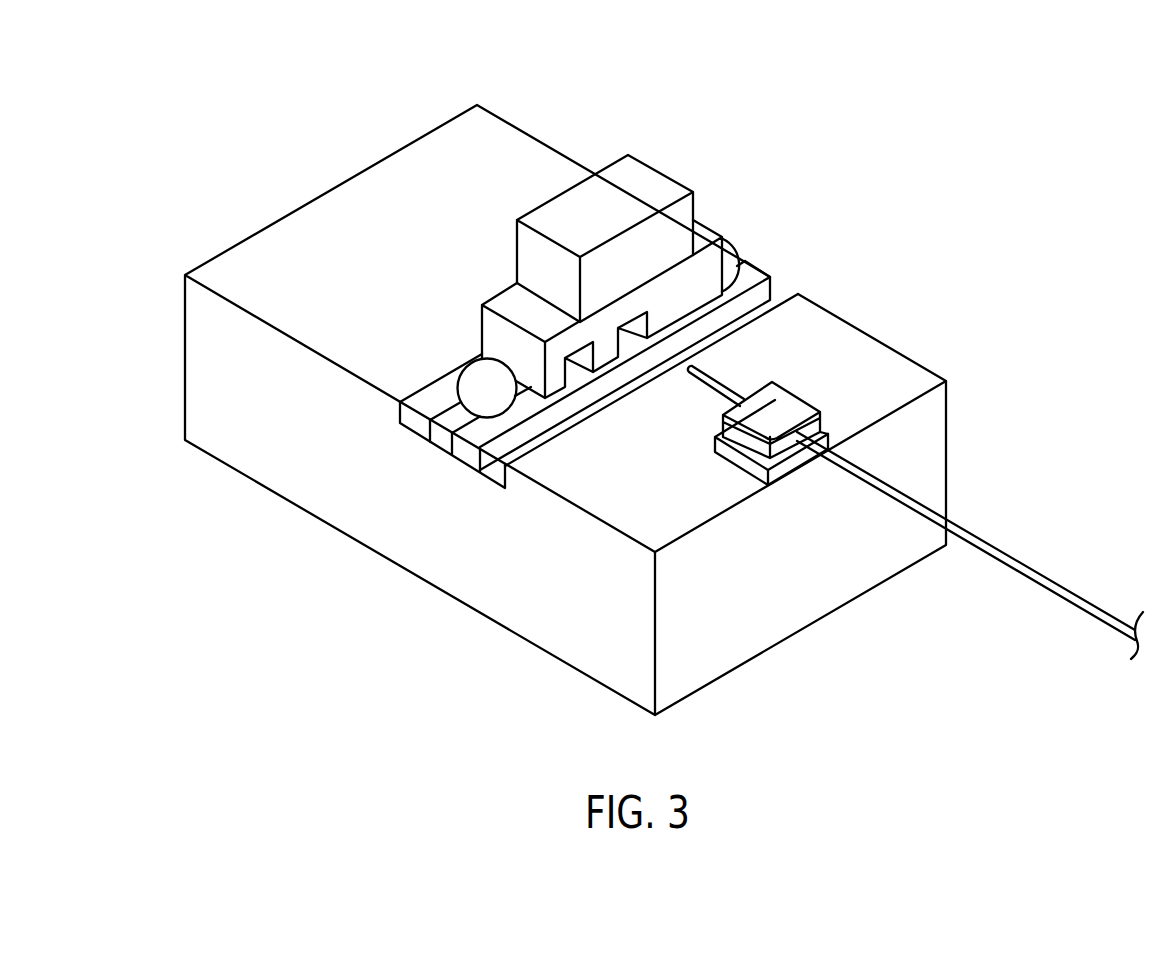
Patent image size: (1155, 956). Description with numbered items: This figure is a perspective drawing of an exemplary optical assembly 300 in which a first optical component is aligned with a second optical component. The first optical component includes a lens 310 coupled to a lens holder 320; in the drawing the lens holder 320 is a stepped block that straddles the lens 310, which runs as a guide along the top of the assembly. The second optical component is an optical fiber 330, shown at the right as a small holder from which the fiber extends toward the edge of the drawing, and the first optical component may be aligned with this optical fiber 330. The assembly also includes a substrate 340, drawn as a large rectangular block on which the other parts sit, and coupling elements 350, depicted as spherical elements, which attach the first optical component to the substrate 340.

The optical assembly 300 is at (637, 373).
The lens 310 is at (628, 328).
The lens holder 320 is at (655, 178).
The optical fiber 330 is at (785, 405).
The substrate 340 is at (243, 443).
The coupling elements 350 is at (472, 385).